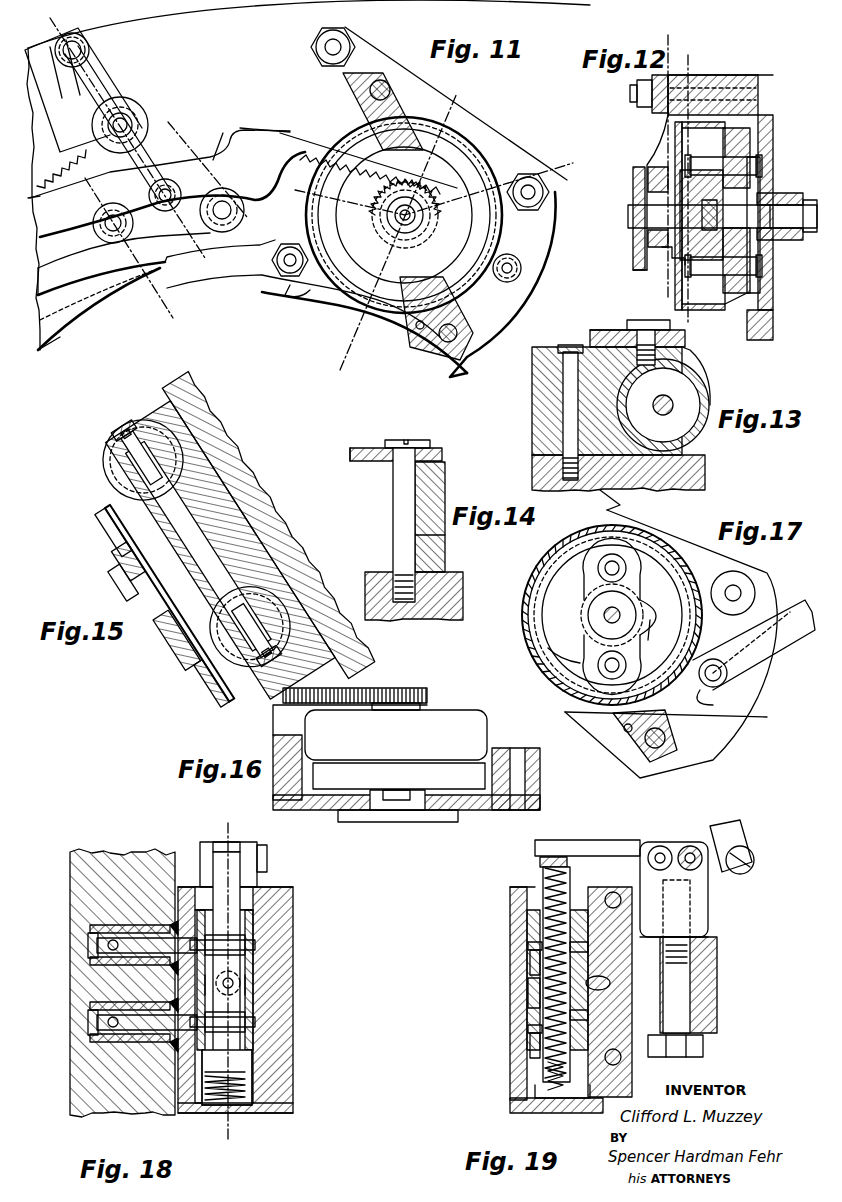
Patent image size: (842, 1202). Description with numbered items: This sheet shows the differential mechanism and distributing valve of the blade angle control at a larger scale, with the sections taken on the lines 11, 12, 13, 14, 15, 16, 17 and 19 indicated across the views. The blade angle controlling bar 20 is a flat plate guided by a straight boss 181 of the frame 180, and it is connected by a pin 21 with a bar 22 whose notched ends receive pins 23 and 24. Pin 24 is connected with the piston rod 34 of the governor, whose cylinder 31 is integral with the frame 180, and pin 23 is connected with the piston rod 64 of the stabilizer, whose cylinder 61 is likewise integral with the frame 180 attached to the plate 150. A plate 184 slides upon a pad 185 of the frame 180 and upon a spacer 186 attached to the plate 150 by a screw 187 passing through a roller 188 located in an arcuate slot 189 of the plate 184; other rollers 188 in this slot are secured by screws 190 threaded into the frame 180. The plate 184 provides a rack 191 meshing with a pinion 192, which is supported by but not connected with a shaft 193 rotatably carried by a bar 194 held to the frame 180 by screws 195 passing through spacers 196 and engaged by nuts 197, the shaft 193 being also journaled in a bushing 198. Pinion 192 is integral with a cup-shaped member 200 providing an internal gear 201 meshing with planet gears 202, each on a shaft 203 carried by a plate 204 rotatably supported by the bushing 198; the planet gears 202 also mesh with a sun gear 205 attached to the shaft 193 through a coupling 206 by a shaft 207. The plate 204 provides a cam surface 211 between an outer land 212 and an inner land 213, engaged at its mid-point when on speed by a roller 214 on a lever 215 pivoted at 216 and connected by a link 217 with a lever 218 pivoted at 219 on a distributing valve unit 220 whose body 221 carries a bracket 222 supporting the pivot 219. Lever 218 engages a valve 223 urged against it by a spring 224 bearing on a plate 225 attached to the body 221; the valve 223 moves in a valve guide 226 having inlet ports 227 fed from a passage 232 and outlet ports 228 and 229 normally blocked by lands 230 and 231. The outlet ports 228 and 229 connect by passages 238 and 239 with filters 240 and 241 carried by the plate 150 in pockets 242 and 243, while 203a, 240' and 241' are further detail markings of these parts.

In FIG. 12, the line 11— 11 is at (668, 40).
In FIG. 11, the line 12— 12 is at (457, 93).
In FIG. 11, the line 13— 13 is at (60, 185).
In FIG. 11, the line 14— 14 is at (168, 122).
In FIG. 11, the line 15— 15 is at (42, 37).
In FIG. 11, the line 16— 16 is at (309, 183).
In FIG. 12, the line 17— 17 is at (690, 58).
In FIG. 18, the line 19— 19 is at (220, 827).
In FIG. 11, the blade angle controlling bar 20 is at (124, 97).
In FIG. 15, the blade angle controlling bar 20 is at (128, 561).
In FIG. 11, the pin 21 is at (135, 115).
In FIG. 15, the pin 21 is at (123, 582).
In FIG. 11, the bar 22 is at (100, 80).
In FIG. 15, the bar 22 is at (198, 546).
In FIG. 11, the pin 23 is at (88, 48).
In FIG. 15, the pin 23 is at (138, 454).
In FIG. 11, the pin 24 is at (165, 191).
In FIG. 15, the pin 24 is at (254, 634).
In FIG. 11, the cylinder 31 is at (66, 335).
In FIG. 13, the cylinder 31 is at (702, 392).
In FIG. 15, the cylinder 31 is at (250, 626).
In FIG. 11, the piston rod 34 is at (130, 232).
In FIG. 15, the piston rod 34 is at (267, 652).
In FIG. 11, the cylinder 61 is at (58, 100).
In FIG. 15, the cylinder 61 is at (143, 460).
In FIG. 11, the piston rod 64 is at (50, 82).
In FIG. 13, the piston rod 64 is at (662, 395).
In FIG. 15, the piston rod 64 is at (126, 433).
In FIG. 11, the plate 150 is at (308, 186).
In FIG. 13, the plate 150 is at (705, 467).
In FIG. 14, the plate 150 is at (383, 572).
In FIG. 15, the plate 150 is at (269, 524).
In FIG. 18, the plate 150 is at (118, 852).
In FIG. 11, the frame 180 is at (498, 135).
In FIG. 12, the frame 180 is at (772, 97).
In FIG. 13, the frame 180 is at (690, 378).
In FIG. 14, the frame 180 is at (445, 553).
In FIG. 15, the frame 180 is at (221, 550).
In FIG. 16, the frame 180 is at (540, 802).
In FIG. 17, the frame 180 is at (747, 600).
In FIG. 15, the straight boss 181 is at (113, 532).
In FIG. 11, the plate 184 is at (288, 132).
In FIG. 13, the plate 184 is at (590, 335).
In FIG. 14, the plate 184 is at (356, 448).
In FIG. 15, the plate 184 is at (177, 640).
In FIG. 16, the plate 184 is at (288, 693).
In FIG. 15, the pad 185 is at (169, 603).
In FIG. 11, the spacer 186 is at (282, 150).
In FIG. 13, the spacer 186 is at (570, 412).
In FIG. 14, the spacer 186 is at (393, 481).
In FIG. 11, the screw 187 is at (262, 165).
In FIG. 14, the screw 187 is at (426, 441).
In FIG. 11, the roller 188 is at (255, 152).
In FIG. 13, the roller 188 is at (625, 330).
In FIG. 14, the roller 188 is at (442, 456).
In FIG. 11, the arcuate slot 189 is at (72, 250).
In FIG. 15, the arcuate slot 189 is at (211, 683).
In FIG. 11, the screw 190 is at (92, 205).
In FIG. 13, the screw 190 is at (636, 325).
In FIG. 11, the rack 191 is at (440, 198).
In FIG. 12, the rack 191 is at (660, 175).
In FIG. 16, the rack 191 is at (345, 692).
In FIG. 11, the pinion 192 is at (382, 224).
In FIG. 12, the pinion 192 is at (640, 196).
In FIG. 12, the shaft 193 is at (628, 215).
In FIG. 17, the shaft 193 is at (603, 622).
In FIG. 12, the bar 194 is at (640, 243).
In FIG. 11, the screw 195 is at (384, 80).
In FIG. 12, the screw 195 is at (634, 88).
In FIG. 11, the spacer 196 is at (412, 90).
In FIG. 12, the spacer 196 is at (742, 77).
In FIG. 12, the nut 197 is at (652, 110).
In FIG. 12, the bushing 198 is at (760, 258).
In FIG. 16, the bushing 198 is at (435, 818).
In FIG. 11, the cup-shaped member 200 is at (335, 296).
In FIG. 12, the cup-shaped member 200 is at (676, 128).
In FIG. 16, the cup-shaped member 200 is at (488, 738).
In FIG. 17, the cup-shaped member 200 is at (530, 598).
In FIG. 12, the internal gear 201 is at (690, 140).
In FIG. 17, the internal gear 201 is at (545, 602).
In FIG. 12, the planet gear 202 is at (690, 150).
In FIG. 17, the planet gear 202 is at (598, 563).
In FIG. 12, the shaft 203 is at (740, 167).
In FIG. 16, the shaft 203 is at (398, 802).
In FIG. 17, the shaft 203 is at (600, 585).
In FIG. 12, the roller arm 203a is at (675, 250).
In FIG. 17, the roller arm 203a is at (548, 648).
In FIG. 12, the plate 204 is at (752, 134).
In FIG. 16, the plate 204 is at (364, 770).
In FIG. 12, the sun gear 205 is at (700, 213).
In FIG. 17, the sun gear 205 is at (592, 613).
In FIG. 12, the coupling 206 is at (790, 203).
In FIG. 12, the shaft 207 is at (808, 230).
In FIG. 17, the cam surface 211 is at (672, 640).
In FIG. 17, the outer land 212 is at (758, 710).
In FIG. 17, the inner land 213 is at (632, 634).
In FIG. 17, the roller 214 is at (720, 705).
In FIG. 17, the lever 215 is at (780, 652).
In FIG. 17, the pivot 216 is at (727, 680).
In FIG. 19, the link 217 is at (742, 840).
In FIG. 18, the lever 218 is at (215, 843).
In FIG. 19, the lever 218 is at (635, 842).
In FIG. 18, the pivot pin or screw 219 is at (268, 860).
In FIG. 19, the pivot pin or screw 219 is at (695, 845).
In FIG. 18, the distributing valve unit 220 is at (70, 835).
In FIG. 19, the distributing valve unit 220 is at (510, 895).
In FIG. 18, the body 221 is at (293, 905).
In FIG. 19, the body 221 is at (510, 1015).
In FIG. 18, the bracket 222 is at (258, 848).
In FIG. 19, the bracket 222 is at (708, 908).
In FIG. 18, the valve 223 is at (258, 878).
In FIG. 19, the valve 223 is at (540, 860).
In FIG. 18, the spring 224 is at (250, 1080).
In FIG. 19, the spring 224 is at (545, 893).
In FIG. 18, the plate 225 is at (293, 1103).
In FIG. 19, the plate 225 is at (510, 1105).
In FIG. 18, the valve guide 226 is at (255, 935).
In FIG. 19, the valve guide 226 is at (528, 923).
In FIG. 18, the inlet port 227 is at (255, 985).
In FIG. 19, the inlet port 227 is at (530, 985).
In FIG. 18, the outlet port 228 is at (222, 945).
In FIG. 19, the outlet port 228 is at (540, 948).
In FIG. 18, the outlet port 229 is at (222, 1022).
In FIG. 19, the outlet port 229 is at (535, 1035).
In FIG. 18, the land 230 is at (255, 945).
In FIG. 19, the land 230 is at (575, 950).
In FIG. 18, the land 231 is at (255, 1020).
In FIG. 19, the land 231 is at (575, 1015).
In FIG. 18, the passage 232 is at (240, 990).
In FIG. 19, the passage 232 is at (605, 985).
In FIG. 18, the passage 238 is at (190, 945).
In FIG. 19, the passage 238 is at (535, 965).
In FIG. 18, the passage 239 is at (190, 1022).
In FIG. 19, the passage 239 is at (535, 1048).
In FIG. 18, the filter 240 is at (63, 939).
In FIG. 18, the passage 240' is at (104, 955).
In FIG. 18, the filter 241 is at (63, 1019).
In FIG. 18, the passage 241' is at (104, 1036).
In FIG. 18, the pocket 242 is at (90, 927).
In FIG. 18, the pocket 243 is at (90, 1003).